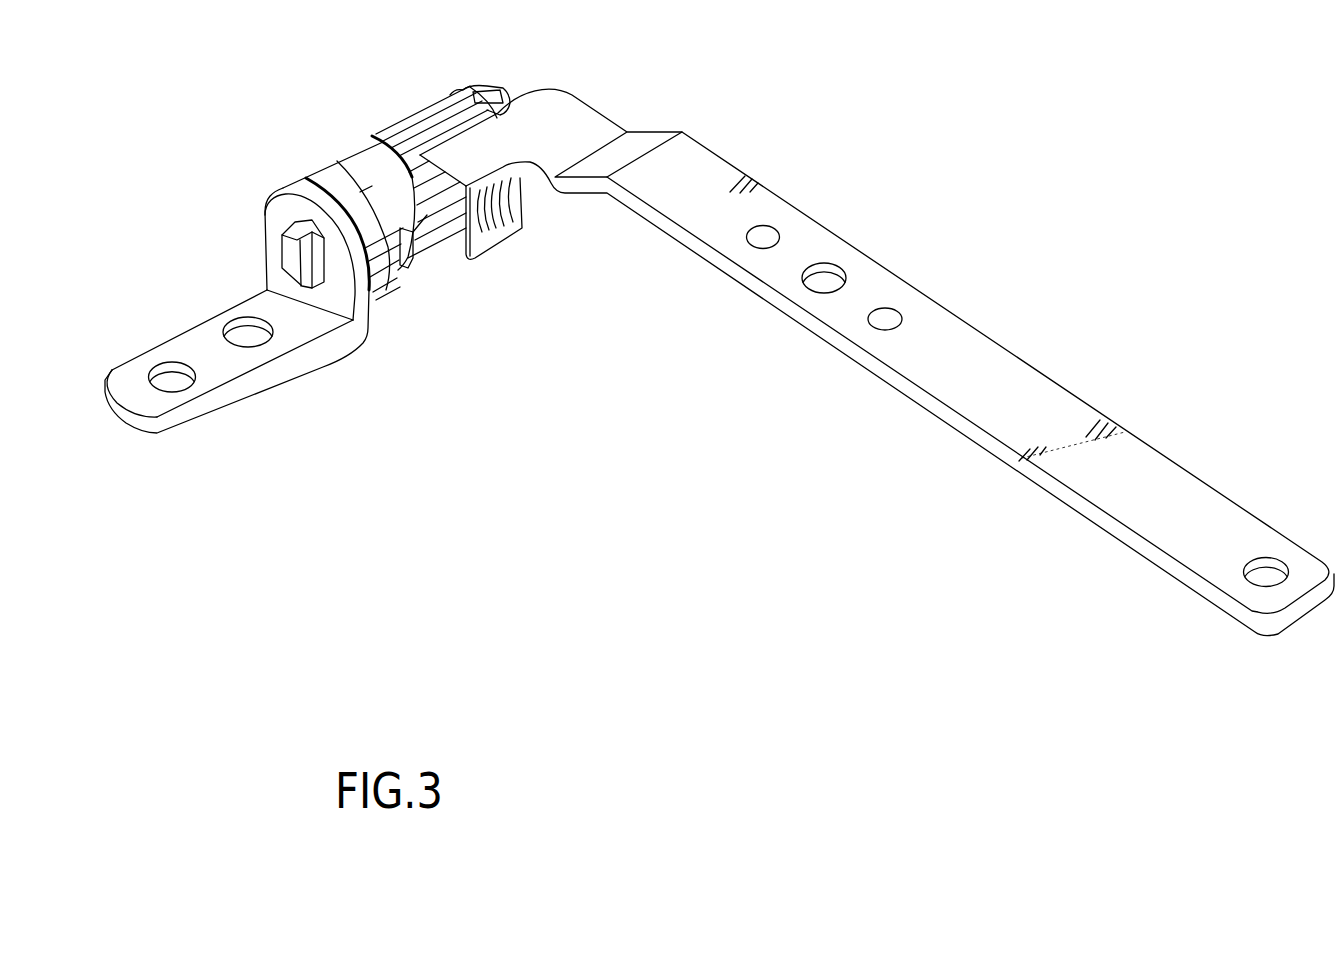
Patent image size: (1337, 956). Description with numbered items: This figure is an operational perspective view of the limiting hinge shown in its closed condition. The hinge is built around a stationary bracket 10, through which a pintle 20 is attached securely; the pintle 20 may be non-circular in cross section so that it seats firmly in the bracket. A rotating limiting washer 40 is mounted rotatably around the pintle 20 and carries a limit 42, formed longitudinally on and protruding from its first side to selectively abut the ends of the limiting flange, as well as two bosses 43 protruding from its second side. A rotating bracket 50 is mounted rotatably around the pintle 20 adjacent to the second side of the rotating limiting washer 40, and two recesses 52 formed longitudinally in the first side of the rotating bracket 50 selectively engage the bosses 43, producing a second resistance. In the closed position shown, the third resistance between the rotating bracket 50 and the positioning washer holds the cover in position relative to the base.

The stationary bracket 10 is at (287, 433).
The pintle 20 is at (292, 255).
The rotating limiting washer 40 is at (440, 245).
The limit 42 is at (402, 254).
The boss 43 is at (383, 148).
The rotating bracket 50 is at (362, 145).
The recess 52 is at (388, 142).